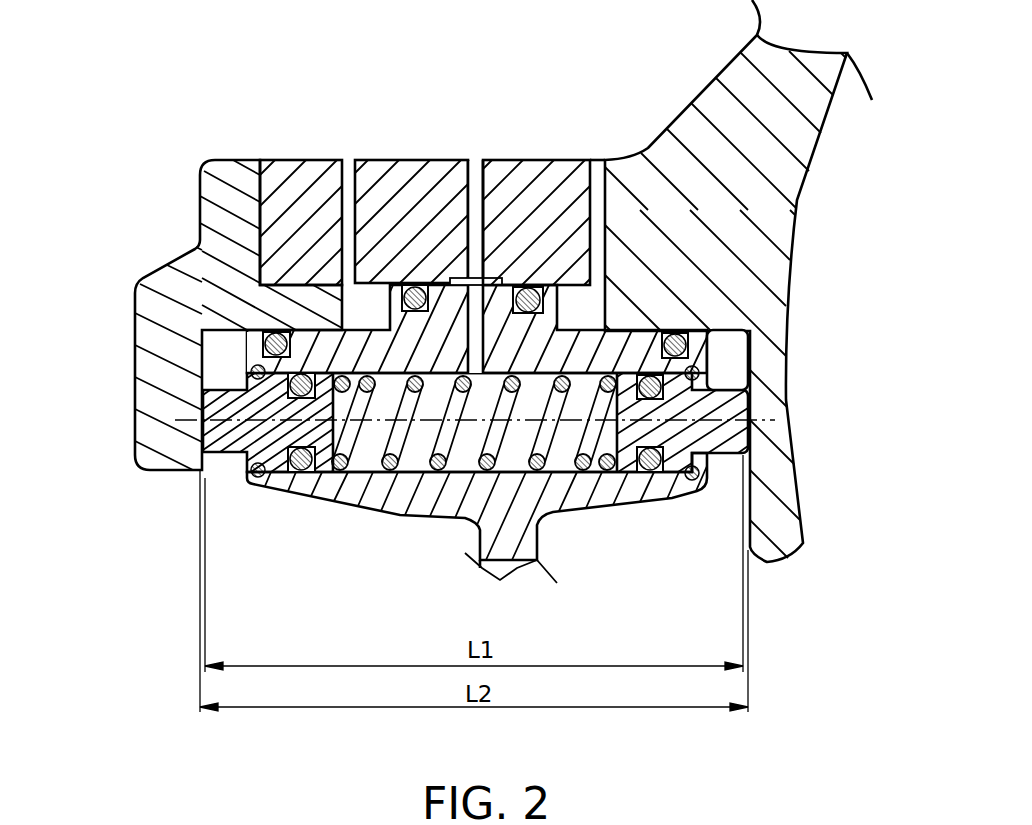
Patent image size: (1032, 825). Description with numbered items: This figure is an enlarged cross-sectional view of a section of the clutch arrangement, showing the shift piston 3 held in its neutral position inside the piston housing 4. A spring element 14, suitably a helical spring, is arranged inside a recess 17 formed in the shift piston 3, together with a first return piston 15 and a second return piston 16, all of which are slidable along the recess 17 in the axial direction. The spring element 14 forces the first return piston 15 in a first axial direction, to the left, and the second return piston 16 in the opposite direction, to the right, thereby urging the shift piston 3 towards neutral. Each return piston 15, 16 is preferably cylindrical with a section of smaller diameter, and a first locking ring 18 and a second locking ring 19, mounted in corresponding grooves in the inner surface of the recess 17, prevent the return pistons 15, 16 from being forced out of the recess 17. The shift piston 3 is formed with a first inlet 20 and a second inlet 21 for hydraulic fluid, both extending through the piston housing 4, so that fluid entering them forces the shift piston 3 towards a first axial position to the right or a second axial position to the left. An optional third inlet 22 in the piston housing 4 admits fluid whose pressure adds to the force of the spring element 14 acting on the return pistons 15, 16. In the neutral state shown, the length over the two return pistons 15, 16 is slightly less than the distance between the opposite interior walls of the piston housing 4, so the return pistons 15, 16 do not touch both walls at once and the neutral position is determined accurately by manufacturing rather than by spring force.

The shift piston 3 is at (318, 488).
The piston housing 4 is at (205, 315).
The spring element 14 is at (367, 470).
The first return piston 15 is at (232, 470).
The second return piston 16 is at (787, 397).
The recess 17 is at (403, 470).
The first locking ring 18 is at (142, 282).
The second locking ring 19 is at (678, 483).
The first inlet 20 is at (347, 160).
The second inlet 21 is at (602, 160).
The third inlet 22 is at (478, 160).